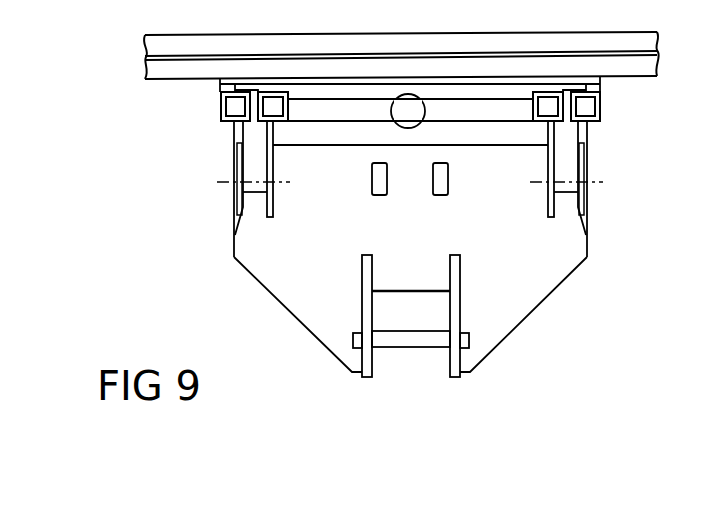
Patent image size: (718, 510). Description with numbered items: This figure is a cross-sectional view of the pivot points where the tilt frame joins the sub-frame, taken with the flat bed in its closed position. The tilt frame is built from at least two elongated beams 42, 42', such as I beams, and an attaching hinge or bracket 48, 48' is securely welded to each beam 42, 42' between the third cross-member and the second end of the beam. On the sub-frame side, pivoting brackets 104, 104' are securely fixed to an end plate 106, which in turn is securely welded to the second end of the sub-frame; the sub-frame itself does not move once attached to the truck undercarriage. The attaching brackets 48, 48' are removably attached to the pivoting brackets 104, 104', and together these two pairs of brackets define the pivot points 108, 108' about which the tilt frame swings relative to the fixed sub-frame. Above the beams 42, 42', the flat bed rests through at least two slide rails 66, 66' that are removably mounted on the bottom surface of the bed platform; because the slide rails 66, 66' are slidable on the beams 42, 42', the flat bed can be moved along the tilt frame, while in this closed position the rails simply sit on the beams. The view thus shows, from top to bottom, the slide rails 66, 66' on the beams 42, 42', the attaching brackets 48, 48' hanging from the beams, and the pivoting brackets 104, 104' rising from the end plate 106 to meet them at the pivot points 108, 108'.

The elongated beam 42 is at (223, 154).
The elongated beam 42' is at (612, 154).
The attaching bracket 48 is at (197, 191).
The attaching bracket 48' is at (633, 183).
The slide rail 66 is at (190, 110).
The slide rail 66' is at (636, 103).
The pivoting bracket 104 is at (207, 201).
The pivoting bracket 104' is at (613, 189).
The end plate 106 is at (528, 315).
The pivot point 108 is at (218, 182).
The pivot point 108' is at (610, 177).